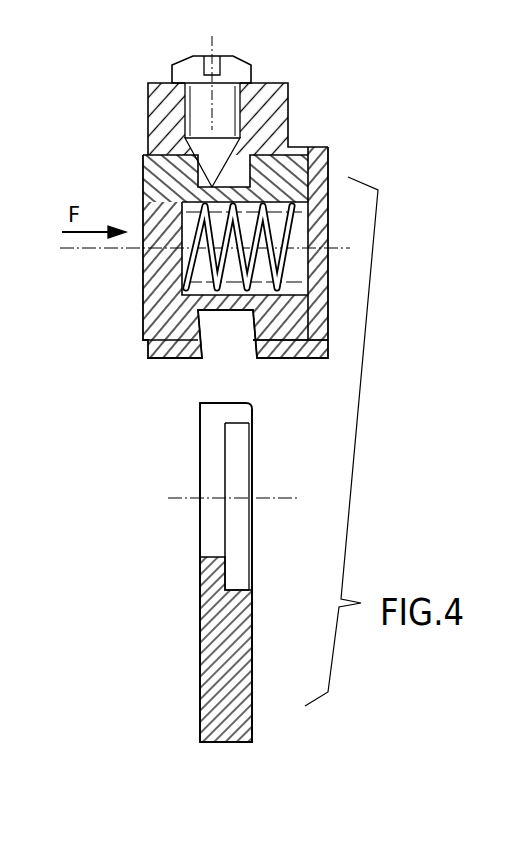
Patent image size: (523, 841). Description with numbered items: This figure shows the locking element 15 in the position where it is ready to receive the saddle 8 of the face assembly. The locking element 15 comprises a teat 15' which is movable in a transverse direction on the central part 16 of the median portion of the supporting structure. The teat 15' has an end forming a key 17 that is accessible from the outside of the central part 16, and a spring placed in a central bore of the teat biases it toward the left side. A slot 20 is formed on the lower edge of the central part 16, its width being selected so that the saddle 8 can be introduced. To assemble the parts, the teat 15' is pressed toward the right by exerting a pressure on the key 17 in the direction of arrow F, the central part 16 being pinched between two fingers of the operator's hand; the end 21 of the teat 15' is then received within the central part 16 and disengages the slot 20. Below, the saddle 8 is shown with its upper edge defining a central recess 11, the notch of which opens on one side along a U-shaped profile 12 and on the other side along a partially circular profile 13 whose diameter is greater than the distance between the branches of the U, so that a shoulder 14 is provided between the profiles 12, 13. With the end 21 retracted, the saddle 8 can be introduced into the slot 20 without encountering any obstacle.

The saddle 8 is at (232, 618).
The central recess 11 is at (253, 455).
The U-shaped profile 12 is at (200, 474).
The partially circular profile 13 is at (252, 476).
The shoulder 14 is at (226, 533).
The locking element 15 is at (194, 252).
The teat 15' is at (195, 164).
The central part 16 is at (268, 98).
The key 17 is at (143, 306).
The slot 20 is at (225, 340).
The end of teat 21 is at (278, 325).